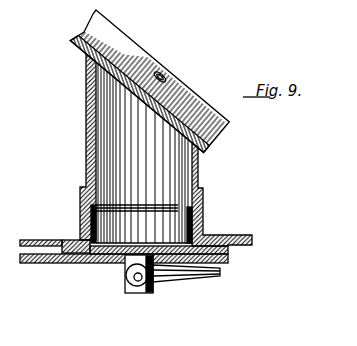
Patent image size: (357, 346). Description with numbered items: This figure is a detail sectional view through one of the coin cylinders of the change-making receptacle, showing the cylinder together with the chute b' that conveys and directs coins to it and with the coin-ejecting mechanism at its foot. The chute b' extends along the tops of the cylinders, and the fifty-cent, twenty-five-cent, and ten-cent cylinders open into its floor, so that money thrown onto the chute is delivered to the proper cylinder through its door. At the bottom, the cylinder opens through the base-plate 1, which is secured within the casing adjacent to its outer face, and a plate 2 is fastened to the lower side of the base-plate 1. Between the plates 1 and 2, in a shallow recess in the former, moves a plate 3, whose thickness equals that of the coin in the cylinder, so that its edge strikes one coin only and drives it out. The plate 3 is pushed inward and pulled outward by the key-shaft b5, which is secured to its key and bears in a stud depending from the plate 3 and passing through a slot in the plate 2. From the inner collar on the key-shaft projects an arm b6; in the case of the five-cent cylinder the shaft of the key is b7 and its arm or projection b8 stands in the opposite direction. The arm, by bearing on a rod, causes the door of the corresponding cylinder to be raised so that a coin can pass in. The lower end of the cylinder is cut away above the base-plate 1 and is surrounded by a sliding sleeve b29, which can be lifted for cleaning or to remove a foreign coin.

The base-plate 1 is at (33, 239).
The plate 2 is at (36, 262).
The plate 3 is at (110, 256).
The chute b' is at (183, 70).
The key-shaft b5 is at (150, 103).
The arm b6 is at (163, 131).
The shaft of the five-cent key b7 is at (127, 292).
The arm or projection b8 is at (182, 274).
The sliding sleeve b29 is at (80, 217).